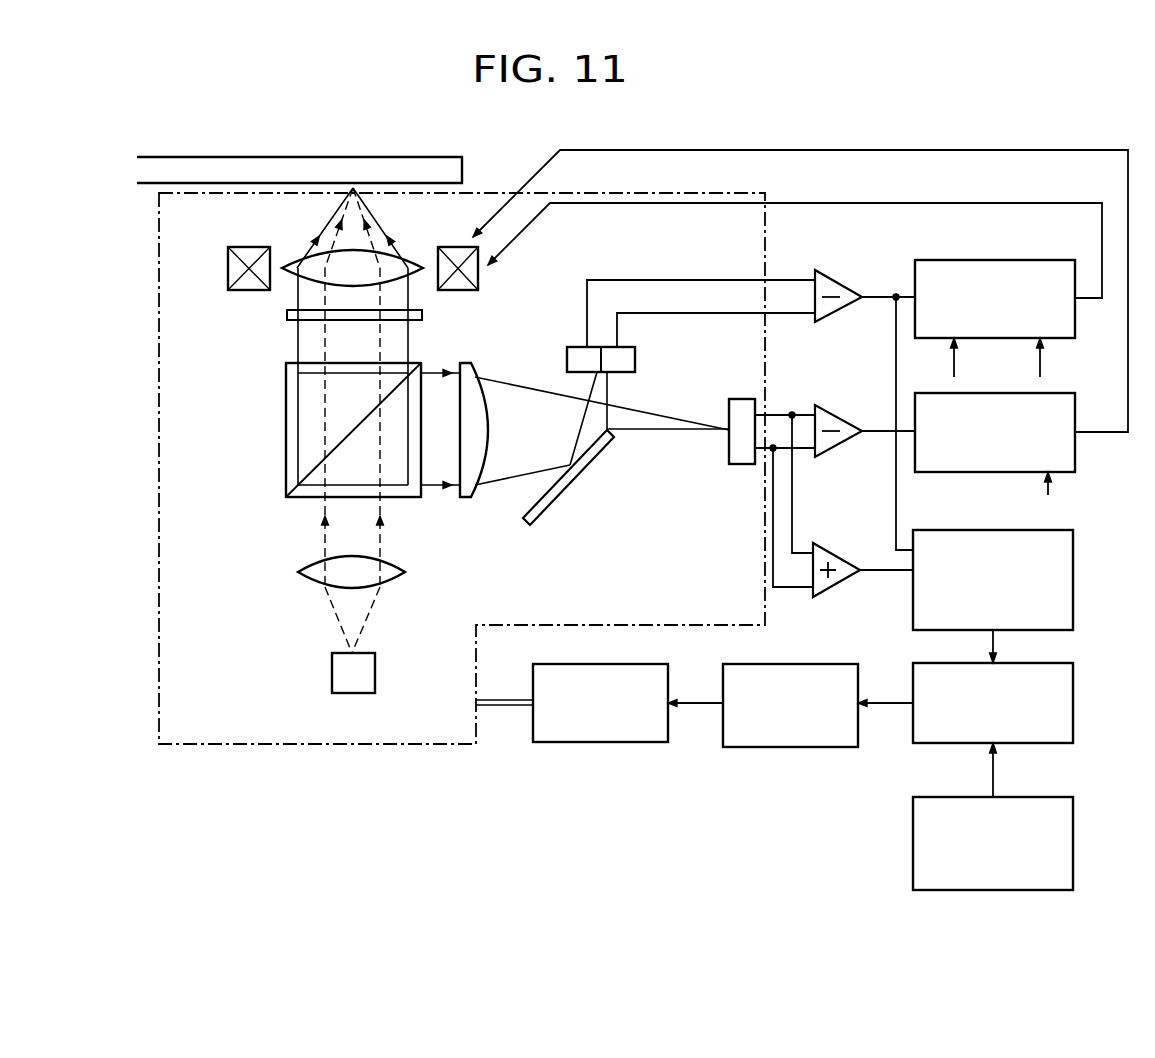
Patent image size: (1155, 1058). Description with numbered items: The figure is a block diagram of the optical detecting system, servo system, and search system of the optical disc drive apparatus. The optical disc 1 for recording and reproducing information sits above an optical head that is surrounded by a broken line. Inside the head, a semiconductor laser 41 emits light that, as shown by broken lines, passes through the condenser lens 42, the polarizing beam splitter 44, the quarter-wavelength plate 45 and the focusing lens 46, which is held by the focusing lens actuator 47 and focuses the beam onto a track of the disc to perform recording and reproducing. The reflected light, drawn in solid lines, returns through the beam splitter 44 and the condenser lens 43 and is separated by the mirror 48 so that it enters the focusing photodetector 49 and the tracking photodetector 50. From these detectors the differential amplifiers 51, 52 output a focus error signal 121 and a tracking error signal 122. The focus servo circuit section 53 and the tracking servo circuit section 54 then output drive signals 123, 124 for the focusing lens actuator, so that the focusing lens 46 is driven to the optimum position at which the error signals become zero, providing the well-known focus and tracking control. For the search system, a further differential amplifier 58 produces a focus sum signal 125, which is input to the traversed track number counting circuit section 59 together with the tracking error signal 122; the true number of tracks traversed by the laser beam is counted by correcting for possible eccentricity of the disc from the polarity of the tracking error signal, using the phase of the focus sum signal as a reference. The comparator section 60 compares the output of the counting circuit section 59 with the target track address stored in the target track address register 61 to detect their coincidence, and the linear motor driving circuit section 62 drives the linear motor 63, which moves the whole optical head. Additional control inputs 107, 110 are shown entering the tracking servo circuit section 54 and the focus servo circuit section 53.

The optical disc 1 is at (313, 157).
The semiconductor laser 41 is at (332, 675).
The condenser lens 42 is at (298, 572).
The condenser lens 43 is at (465, 498).
The polarizing beam splitter 44 is at (286, 413).
The 1/4 wavelength plate 45 is at (287, 316).
The focusing lens 46 is at (413, 260).
The focusing lens actuator 47 is at (228, 271).
The mirror 48 is at (555, 502).
The focusing photodetector 49 is at (740, 399).
The tracking photodetector 50 is at (567, 357).
The differential amplifier 51 is at (846, 404).
The differential amplifier 52 is at (852, 259).
The focus servo circuit section 53 is at (996, 393).
The tracking servo circuit section 54 is at (995, 260).
The differential amplifier 58 is at (848, 537).
The traversed track number counting circuit section 59 is at (1073, 576).
The comparator section 60 is at (1073, 708).
The target track address register 61 is at (1073, 841).
The linear motor driving circuit section 62 is at (790, 748).
The linear motor 63 is at (598, 743).
The control signal 107 is at (954, 366).
The control signal 110 is at (1040, 366).
The focus error signal 121 is at (868, 433).
The tracking error signal 122 is at (868, 299).
The drive signal 123 is at (939, 150).
The drive signal 124 is at (967, 204).
The focus sum signal 125 is at (878, 572).